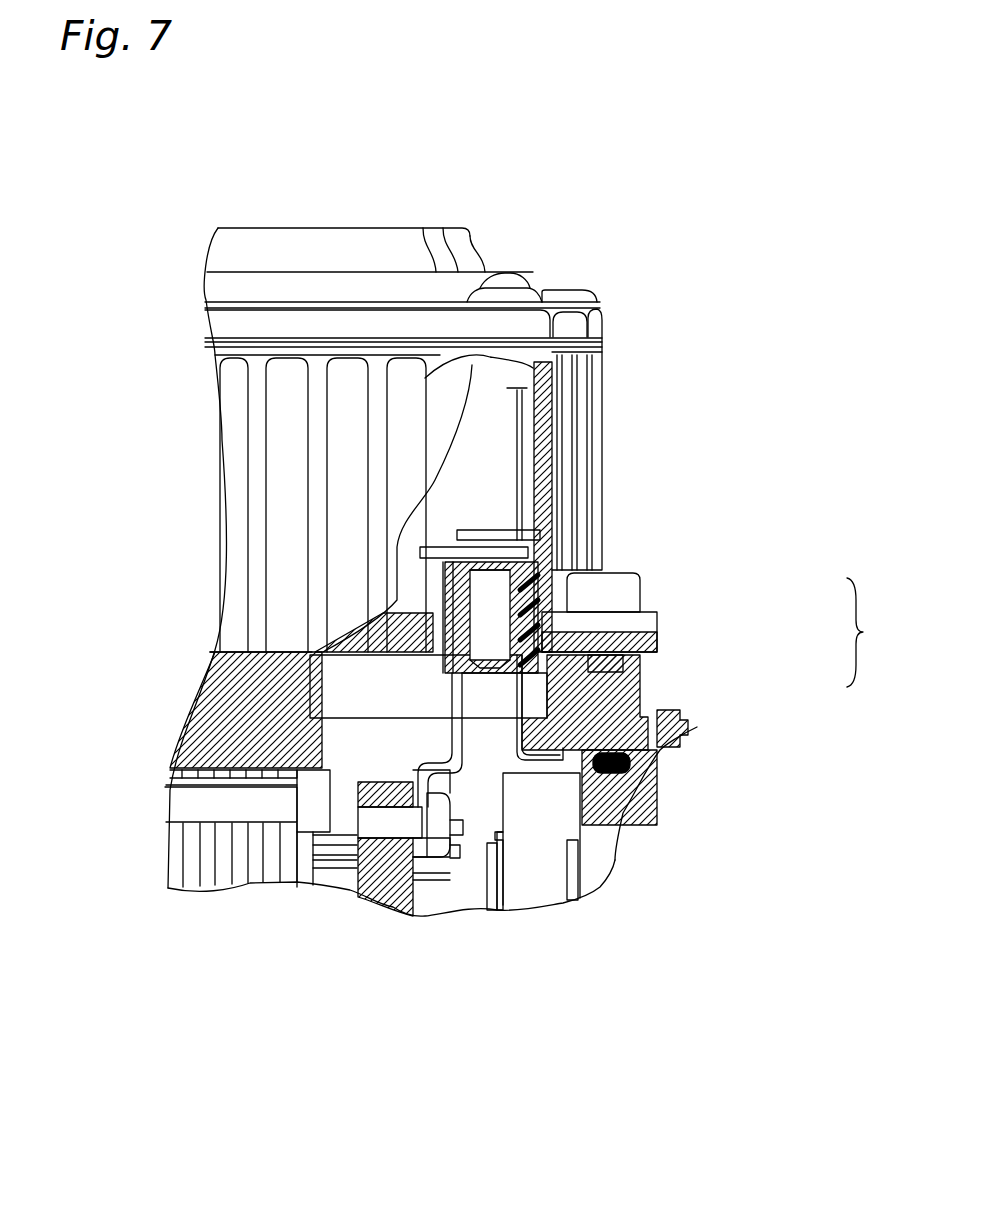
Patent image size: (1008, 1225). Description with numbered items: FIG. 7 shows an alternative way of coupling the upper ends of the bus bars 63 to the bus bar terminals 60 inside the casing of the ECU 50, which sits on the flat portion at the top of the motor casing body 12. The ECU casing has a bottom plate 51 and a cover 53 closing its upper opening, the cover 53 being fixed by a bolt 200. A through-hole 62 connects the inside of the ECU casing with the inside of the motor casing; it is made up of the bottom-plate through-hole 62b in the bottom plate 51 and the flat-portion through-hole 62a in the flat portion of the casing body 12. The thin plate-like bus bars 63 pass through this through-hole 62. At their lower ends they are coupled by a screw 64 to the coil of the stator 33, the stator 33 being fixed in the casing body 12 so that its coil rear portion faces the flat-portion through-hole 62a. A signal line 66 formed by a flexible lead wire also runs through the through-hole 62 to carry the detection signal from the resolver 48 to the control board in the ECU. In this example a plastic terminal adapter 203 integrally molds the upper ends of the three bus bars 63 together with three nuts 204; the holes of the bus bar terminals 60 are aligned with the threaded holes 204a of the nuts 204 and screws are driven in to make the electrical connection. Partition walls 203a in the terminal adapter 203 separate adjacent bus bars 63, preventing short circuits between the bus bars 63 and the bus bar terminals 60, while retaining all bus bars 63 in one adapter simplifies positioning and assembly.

The ECU 50 is at (235, 203).
The cover 53 is at (298, 252).
The bottom plate 51 is at (235, 628).
The casing body 12 is at (240, 735).
The bus bar 63 is at (452, 698).
The bus bar terminal 60 is at (430, 548).
The nut 204 is at (440, 585).
The threaded hole 204a is at (492, 570).
The signal line 66 is at (520, 462).
The bolt 200 is at (510, 292).
The partition wall 203a is at (507, 520).
The terminal adapter 203 is at (607, 594).
The bottom-plate through-hole 62b is at (635, 635).
The flat-portion through-hole 62a is at (648, 678).
The through-hole 62 is at (877, 632).
The resolver 48 is at (560, 830).
The stator 33 is at (385, 880).
The screw 64 is at (450, 800).